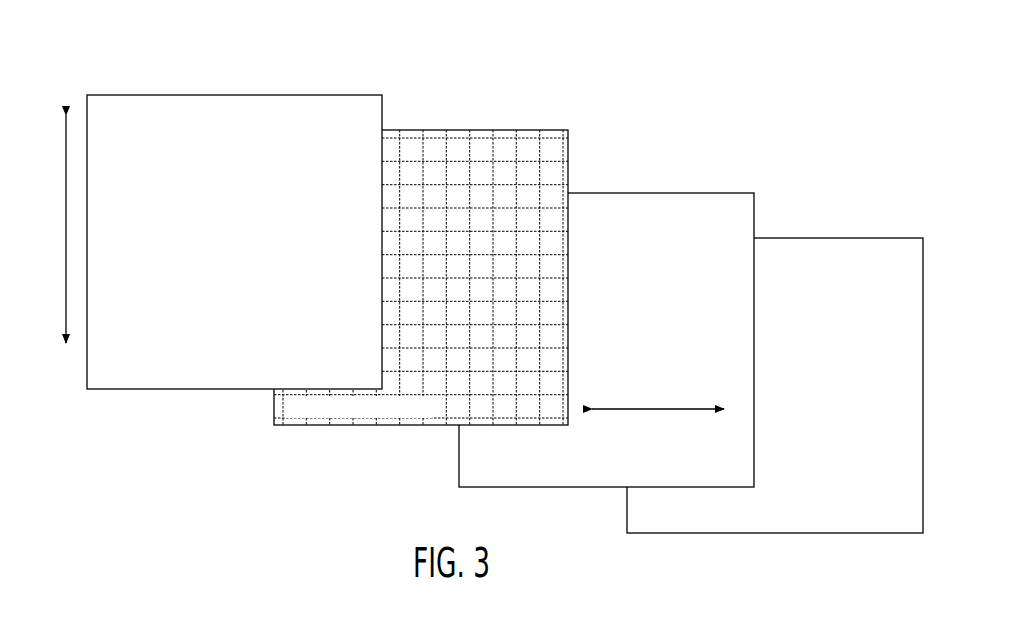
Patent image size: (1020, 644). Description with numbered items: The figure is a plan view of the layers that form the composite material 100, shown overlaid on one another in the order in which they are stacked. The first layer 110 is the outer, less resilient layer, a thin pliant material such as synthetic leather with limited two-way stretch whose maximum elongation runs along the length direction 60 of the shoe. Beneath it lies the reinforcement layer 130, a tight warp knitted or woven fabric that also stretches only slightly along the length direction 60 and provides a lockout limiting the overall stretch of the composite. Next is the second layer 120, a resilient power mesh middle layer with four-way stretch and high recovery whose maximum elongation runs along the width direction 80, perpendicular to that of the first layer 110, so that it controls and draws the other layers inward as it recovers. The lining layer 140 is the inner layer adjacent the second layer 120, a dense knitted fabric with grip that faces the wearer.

The composite material 100 is at (732, 88).
The first layer 110 is at (333, 95).
The reinforcement layer 130 is at (520, 130).
The second layer 120 is at (707, 193).
The lining layer 140 is at (876, 238).
The length direction 60 is at (66, 170).
The width direction 80 is at (635, 409).